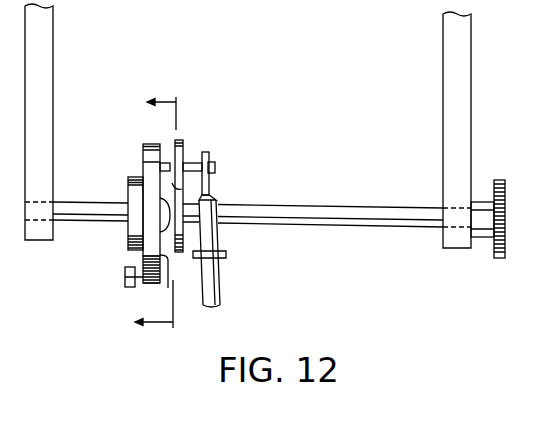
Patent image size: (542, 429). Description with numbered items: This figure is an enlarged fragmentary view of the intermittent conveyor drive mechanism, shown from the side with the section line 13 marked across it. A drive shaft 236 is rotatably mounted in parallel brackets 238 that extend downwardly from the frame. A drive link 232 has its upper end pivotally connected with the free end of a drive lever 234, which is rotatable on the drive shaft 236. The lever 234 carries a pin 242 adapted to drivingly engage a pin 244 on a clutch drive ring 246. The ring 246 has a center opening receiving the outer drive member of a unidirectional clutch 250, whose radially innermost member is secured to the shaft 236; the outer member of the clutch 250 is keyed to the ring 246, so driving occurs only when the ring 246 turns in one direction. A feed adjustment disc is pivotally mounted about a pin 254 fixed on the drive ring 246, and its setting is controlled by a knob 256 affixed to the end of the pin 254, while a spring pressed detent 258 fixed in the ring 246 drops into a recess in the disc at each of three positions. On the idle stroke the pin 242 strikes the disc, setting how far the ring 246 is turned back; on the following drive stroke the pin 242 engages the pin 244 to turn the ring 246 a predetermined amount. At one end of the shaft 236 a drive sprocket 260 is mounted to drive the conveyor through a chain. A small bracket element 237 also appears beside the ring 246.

The brackets 238 is at (55, 44).
The drive shaft 236 is at (366, 207).
The unidirectional clutch 250 is at (128, 184).
The clutch drive ring 246 is at (143, 148).
The spring pressed detent 258 is at (143, 258).
The pin 244 is at (170, 163).
The drive lever 234 is at (183, 150).
The pin 242 is at (182, 189).
The drive link 232 is at (222, 268).
The knob 256 is at (125, 278).
The pin 254 is at (143, 286).
The spring bracket 237 is at (178, 285).
The drive sprocket 260 is at (512, 172).
The section line 13- 13 is at (153, 213).